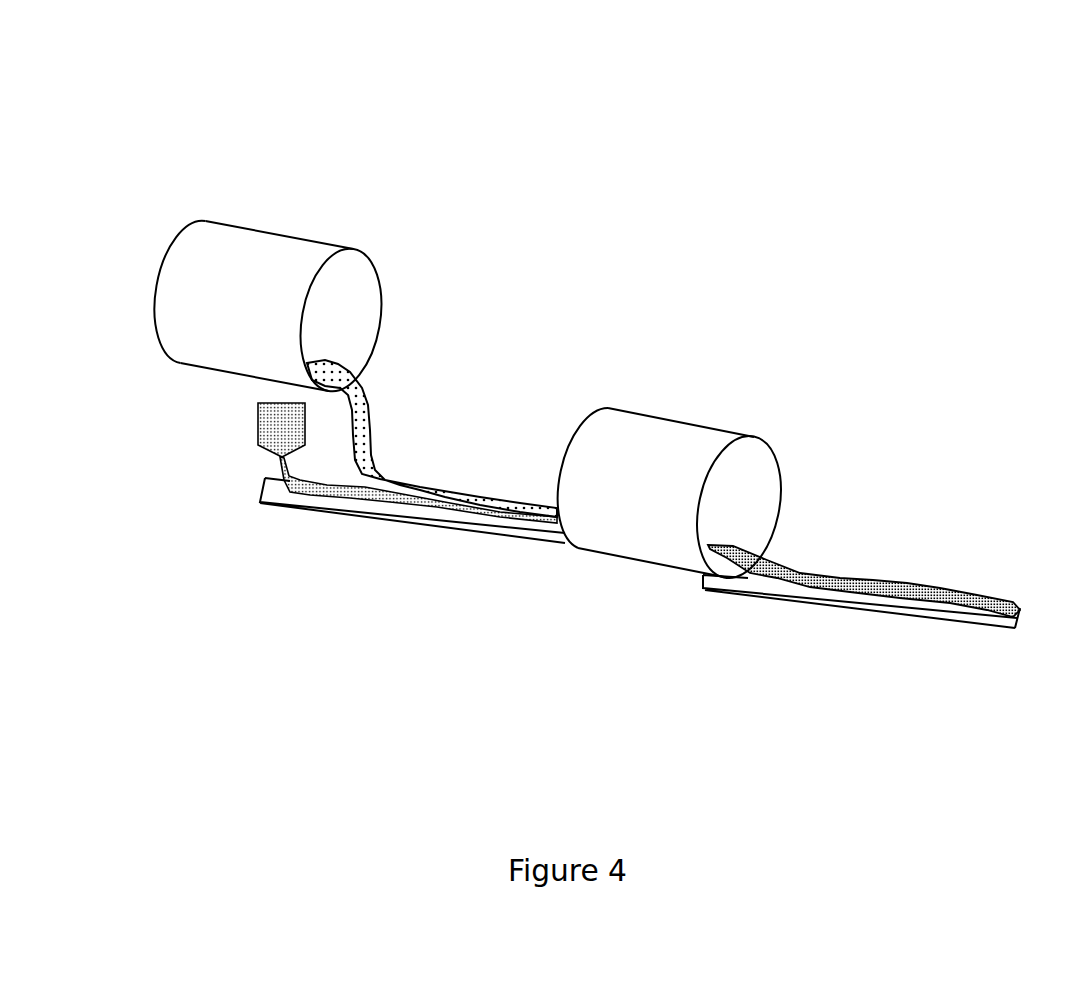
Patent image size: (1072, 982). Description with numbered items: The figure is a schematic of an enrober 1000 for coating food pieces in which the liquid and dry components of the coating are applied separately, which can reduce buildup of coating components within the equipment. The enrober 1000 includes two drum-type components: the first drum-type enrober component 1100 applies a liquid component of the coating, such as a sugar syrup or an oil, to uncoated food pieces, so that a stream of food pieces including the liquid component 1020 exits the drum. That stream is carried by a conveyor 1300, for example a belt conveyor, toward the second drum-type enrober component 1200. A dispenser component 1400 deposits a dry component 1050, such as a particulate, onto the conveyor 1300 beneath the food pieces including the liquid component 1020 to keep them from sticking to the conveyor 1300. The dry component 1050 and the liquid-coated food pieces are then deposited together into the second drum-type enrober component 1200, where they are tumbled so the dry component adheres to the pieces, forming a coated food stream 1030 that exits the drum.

The enrober 1000 is at (246, 62).
The first drum-type enrober component 1100 is at (185, 340).
The stream of food pieces including the liquid component 1020 is at (362, 420).
The dispenser component 1400 is at (272, 422).
The dry component 1050 is at (323, 490).
The conveyor 1300 is at (273, 493).
The second drum-type enrober component 1200 is at (697, 438).
The coated food stream 1030 is at (857, 582).